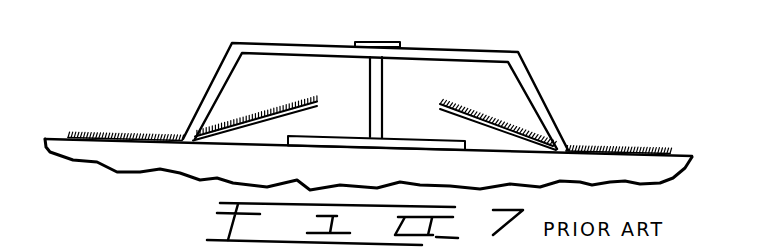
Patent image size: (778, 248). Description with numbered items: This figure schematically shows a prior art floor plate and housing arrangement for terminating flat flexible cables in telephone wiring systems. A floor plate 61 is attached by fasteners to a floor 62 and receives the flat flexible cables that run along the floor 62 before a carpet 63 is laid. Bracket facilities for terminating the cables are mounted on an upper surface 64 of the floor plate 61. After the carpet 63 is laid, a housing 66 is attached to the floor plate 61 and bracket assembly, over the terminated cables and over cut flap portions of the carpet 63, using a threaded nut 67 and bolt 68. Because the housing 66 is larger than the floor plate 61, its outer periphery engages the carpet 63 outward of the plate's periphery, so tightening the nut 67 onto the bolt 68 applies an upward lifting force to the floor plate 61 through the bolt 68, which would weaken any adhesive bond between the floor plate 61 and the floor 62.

The floor plate 61 is at (411, 144).
The floor 62 is at (258, 146).
The carpet 63 is at (600, 148).
The upper surface 64 is at (343, 135).
The housing 66 is at (463, 51).
The nut 67 is at (376, 42).
The bolt 68 is at (383, 70).